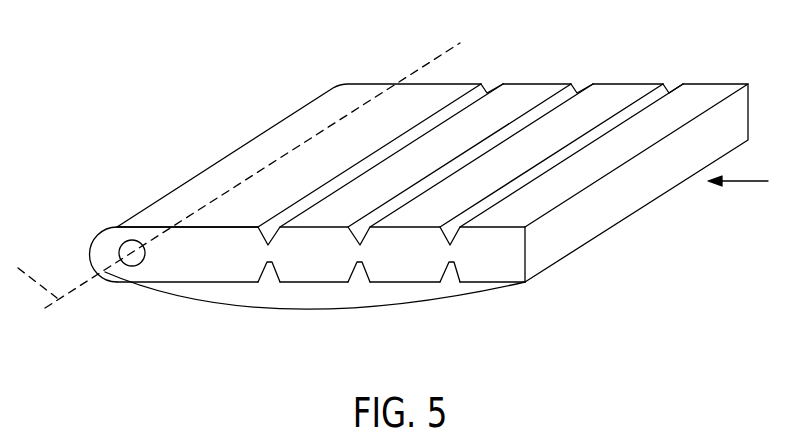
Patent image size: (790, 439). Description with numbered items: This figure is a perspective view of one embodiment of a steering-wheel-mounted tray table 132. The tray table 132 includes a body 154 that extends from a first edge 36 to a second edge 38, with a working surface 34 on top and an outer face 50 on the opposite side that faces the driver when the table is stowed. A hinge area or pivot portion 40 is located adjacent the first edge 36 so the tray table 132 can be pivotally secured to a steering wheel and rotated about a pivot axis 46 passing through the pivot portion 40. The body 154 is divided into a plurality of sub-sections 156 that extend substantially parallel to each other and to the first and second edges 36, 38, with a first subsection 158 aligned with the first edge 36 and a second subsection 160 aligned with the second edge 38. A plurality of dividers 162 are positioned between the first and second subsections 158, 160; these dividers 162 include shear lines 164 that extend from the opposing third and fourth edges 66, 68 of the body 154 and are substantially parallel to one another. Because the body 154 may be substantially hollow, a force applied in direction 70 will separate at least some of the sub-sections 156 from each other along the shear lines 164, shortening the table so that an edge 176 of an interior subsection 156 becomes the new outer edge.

The tray table 132 is at (228, 99).
The body 154 is at (393, 97).
The divider 162 is at (484, 92).
The edge of an interior subsection 176 is at (307, 195).
The working surface 34 is at (555, 90).
The shear lines 164 is at (510, 135).
The second edge 38 is at (617, 212).
The second subsection 160 is at (515, 265).
The first edge 36 is at (100, 245).
The first subsection 158 is at (178, 265).
The sub-sections 156 is at (227, 265).
The third edge 66 is at (343, 263).
The pivot portion 40 is at (127, 278).
The fourth edge 68 is at (438, 86).
The pivot axis 46 is at (33, 268).
The outer face 50 is at (403, 307).
The direction of force 70 is at (745, 182).